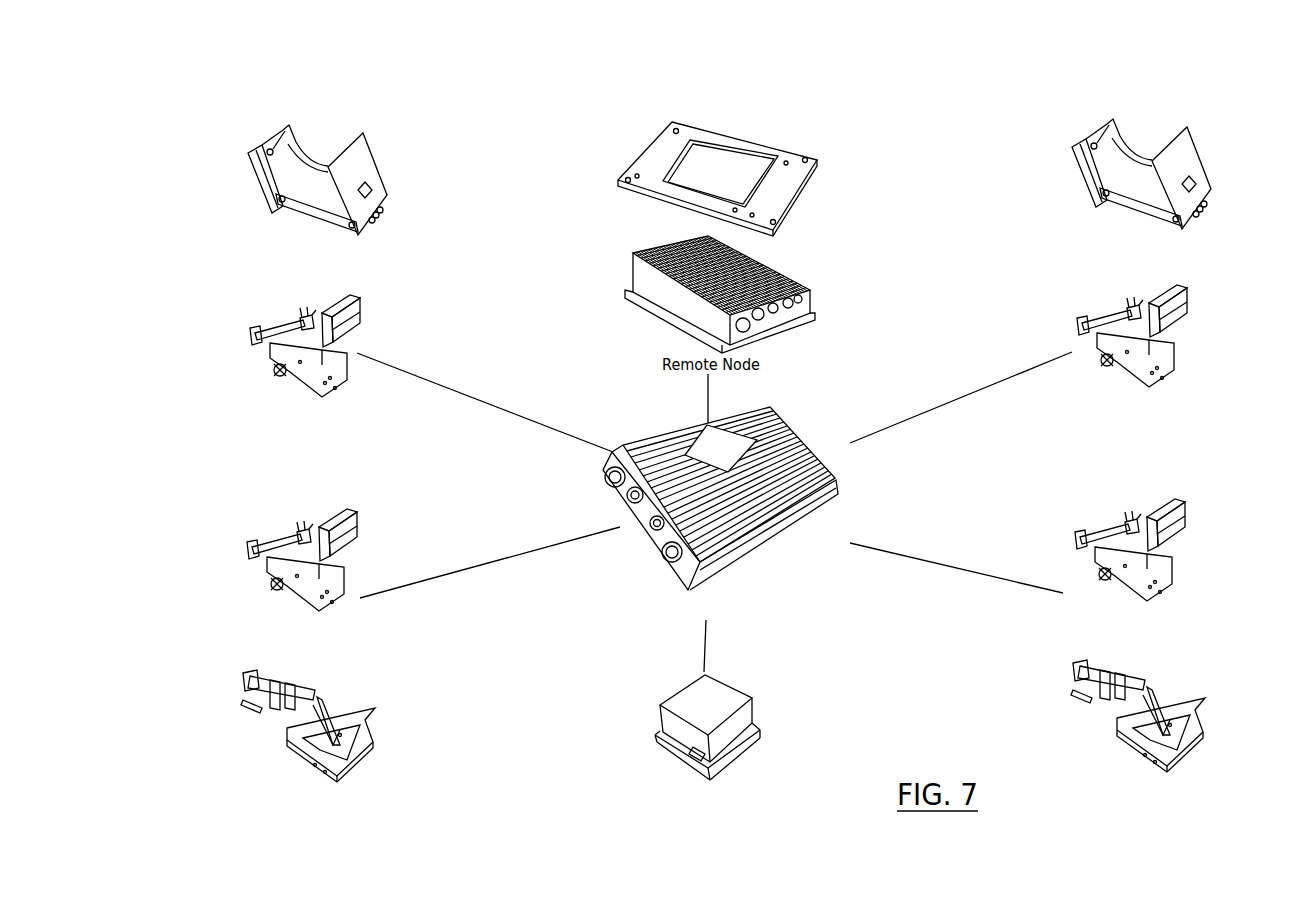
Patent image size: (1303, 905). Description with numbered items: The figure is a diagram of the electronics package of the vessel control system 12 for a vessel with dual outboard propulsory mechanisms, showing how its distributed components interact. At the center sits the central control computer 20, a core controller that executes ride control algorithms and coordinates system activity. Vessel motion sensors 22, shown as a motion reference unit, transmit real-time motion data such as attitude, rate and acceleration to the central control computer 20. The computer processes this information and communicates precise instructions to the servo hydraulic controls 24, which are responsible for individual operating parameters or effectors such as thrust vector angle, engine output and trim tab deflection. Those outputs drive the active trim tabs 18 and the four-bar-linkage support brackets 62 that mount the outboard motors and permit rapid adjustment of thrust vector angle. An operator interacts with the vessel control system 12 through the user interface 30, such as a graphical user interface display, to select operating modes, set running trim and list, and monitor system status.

The vessel control system 12 is at (917, 130).
The active trim tab 18 is at (257, 710).
The central control computer 20 is at (747, 557).
The vessel motion sensors 22 is at (752, 710).
The servo hydraulic control 24 is at (257, 348).
The user interface 30 is at (807, 180).
The four-bar-linkage support bracket 62 is at (250, 167).